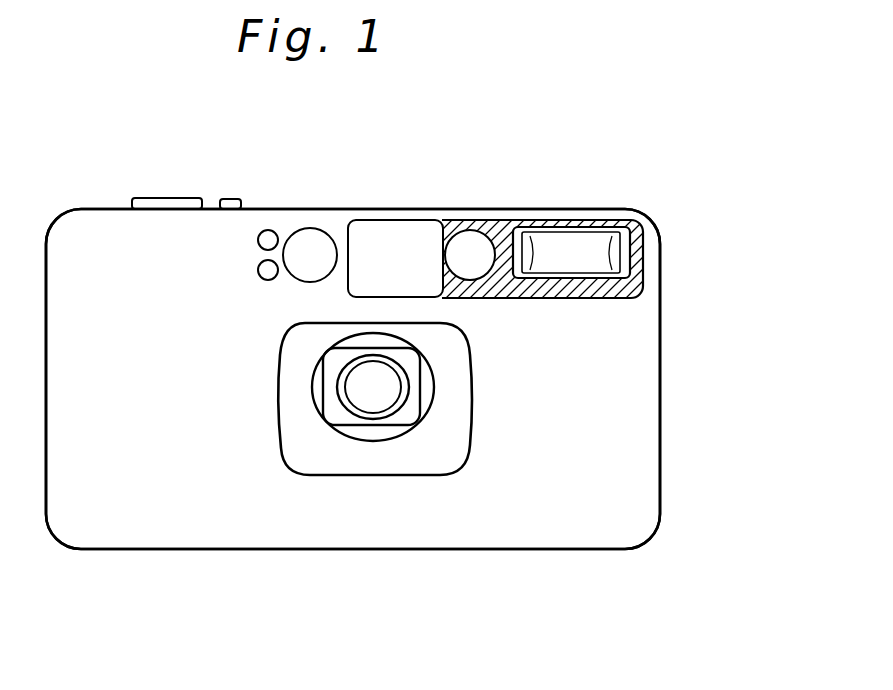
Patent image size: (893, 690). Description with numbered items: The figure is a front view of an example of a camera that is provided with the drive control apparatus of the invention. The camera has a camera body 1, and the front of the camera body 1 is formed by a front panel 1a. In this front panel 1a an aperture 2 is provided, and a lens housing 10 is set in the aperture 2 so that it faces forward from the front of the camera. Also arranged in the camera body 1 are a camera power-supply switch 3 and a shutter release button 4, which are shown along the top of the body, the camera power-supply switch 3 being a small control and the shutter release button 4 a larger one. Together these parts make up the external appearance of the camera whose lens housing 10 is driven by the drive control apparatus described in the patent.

The camera body 1 is at (672, 314).
The front panel 1a is at (627, 421).
The aperture 2 is at (468, 424).
The camera power-supply switch 3 is at (231, 198).
The shutter release button 4 is at (161, 198).
The lens housing 10 is at (453, 367).